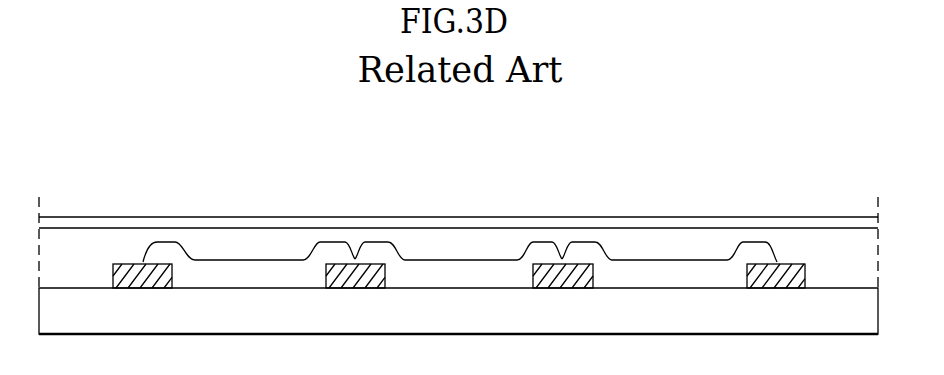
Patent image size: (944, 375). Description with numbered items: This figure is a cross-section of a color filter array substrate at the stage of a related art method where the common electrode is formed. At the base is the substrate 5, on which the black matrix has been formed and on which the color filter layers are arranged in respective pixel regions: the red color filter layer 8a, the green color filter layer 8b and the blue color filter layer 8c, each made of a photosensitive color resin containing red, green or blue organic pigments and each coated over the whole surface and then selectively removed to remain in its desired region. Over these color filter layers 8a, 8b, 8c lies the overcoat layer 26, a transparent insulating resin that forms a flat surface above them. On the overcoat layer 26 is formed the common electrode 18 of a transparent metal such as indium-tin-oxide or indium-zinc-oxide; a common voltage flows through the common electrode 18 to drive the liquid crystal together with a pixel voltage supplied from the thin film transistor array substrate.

The substrate 5 is at (447, 320).
The red color filter layer 8a is at (246, 260).
The green color filter layer 8b is at (459, 260).
The blue color filter layer 8c is at (666, 260).
The common electrode 18 is at (380, 217).
The overcoat layer 26 is at (308, 228).